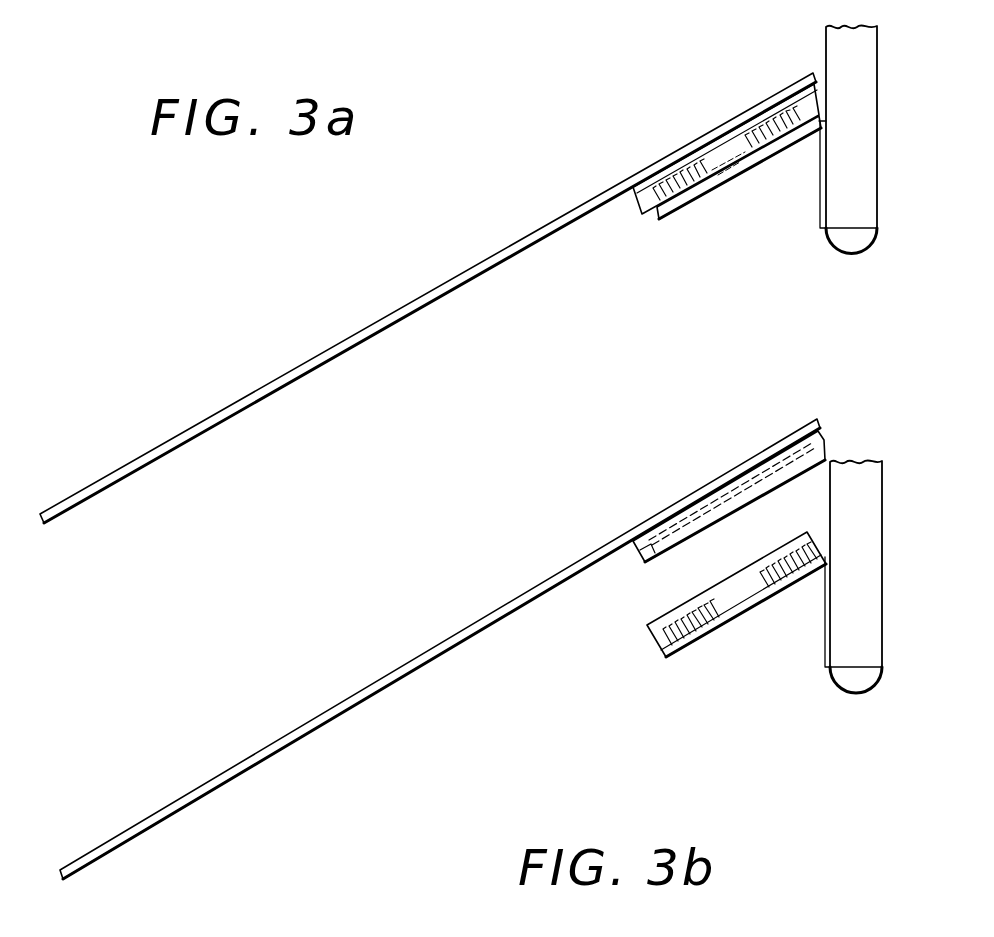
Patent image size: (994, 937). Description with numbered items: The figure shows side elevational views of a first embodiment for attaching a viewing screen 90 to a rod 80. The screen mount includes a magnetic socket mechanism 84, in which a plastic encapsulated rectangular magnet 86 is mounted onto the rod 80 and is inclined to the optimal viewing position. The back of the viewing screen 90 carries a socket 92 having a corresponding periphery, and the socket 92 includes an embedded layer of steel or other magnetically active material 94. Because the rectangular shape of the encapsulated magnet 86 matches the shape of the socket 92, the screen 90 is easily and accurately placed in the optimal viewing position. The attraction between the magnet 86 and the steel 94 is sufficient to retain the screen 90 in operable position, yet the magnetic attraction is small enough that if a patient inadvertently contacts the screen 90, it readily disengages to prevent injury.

In FIG. 3a, the rod 80 is at (853, 258).
In FIG. 3b, the rod 80 is at (863, 490).
In FIG. 3a, the magnetic socket mechanism 84 is at (648, 218).
In FIG. 3a, the plastic encapsulated rectangular magnet 86 is at (700, 215).
In FIG. 3b, the plastic encapsulated rectangular magnet 86 is at (690, 650).
In FIG. 3a, the viewing screen 90 is at (522, 238).
In FIG. 3b, the viewing screen 90 is at (232, 767).
In FIG. 3b, the socket 92 is at (665, 558).
In FIG. 3b, the embedded layer of steel or other magnetically active material 94 is at (675, 518).